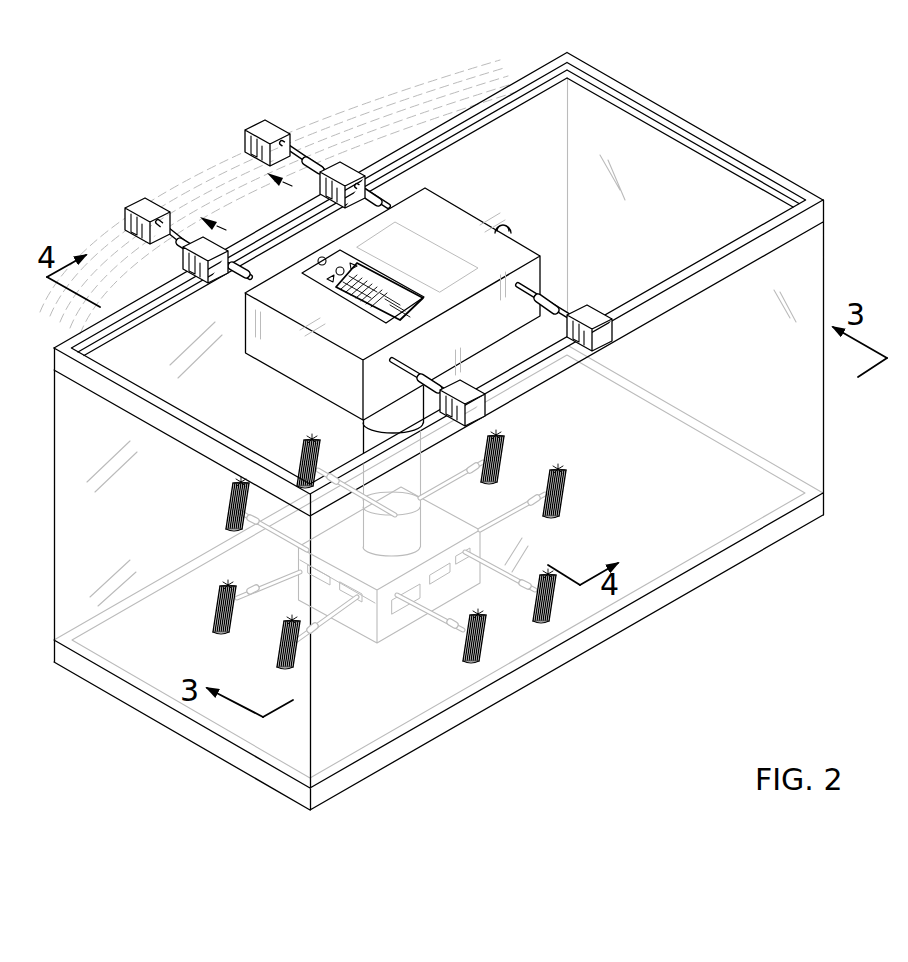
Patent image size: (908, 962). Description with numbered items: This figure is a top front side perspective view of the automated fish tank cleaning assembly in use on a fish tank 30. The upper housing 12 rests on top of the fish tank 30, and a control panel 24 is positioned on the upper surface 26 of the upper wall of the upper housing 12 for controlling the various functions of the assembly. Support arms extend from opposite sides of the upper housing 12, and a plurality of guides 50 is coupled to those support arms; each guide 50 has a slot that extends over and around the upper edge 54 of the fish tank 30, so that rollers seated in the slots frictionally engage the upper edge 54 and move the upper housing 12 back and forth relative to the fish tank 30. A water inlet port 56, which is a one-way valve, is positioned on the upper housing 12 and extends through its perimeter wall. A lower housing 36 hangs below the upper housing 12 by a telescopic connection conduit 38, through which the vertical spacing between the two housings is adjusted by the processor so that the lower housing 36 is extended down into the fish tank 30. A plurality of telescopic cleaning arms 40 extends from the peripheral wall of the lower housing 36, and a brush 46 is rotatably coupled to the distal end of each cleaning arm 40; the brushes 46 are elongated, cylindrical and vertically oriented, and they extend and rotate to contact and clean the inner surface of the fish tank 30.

The upper housing 12 is at (388, 284).
The control panel 24 is at (312, 272).
The upper surface 26 is at (341, 322).
The fish tank 30 is at (372, 90).
The lower housing 36 is at (394, 628).
The connection conduit 38 is at (368, 438).
The cleaning arms 40 is at (497, 573).
The brushes 46 is at (306, 447).
The guides 50 is at (345, 173).
The upper edge 54 is at (401, 151).
The water inlet port 56 is at (504, 229).